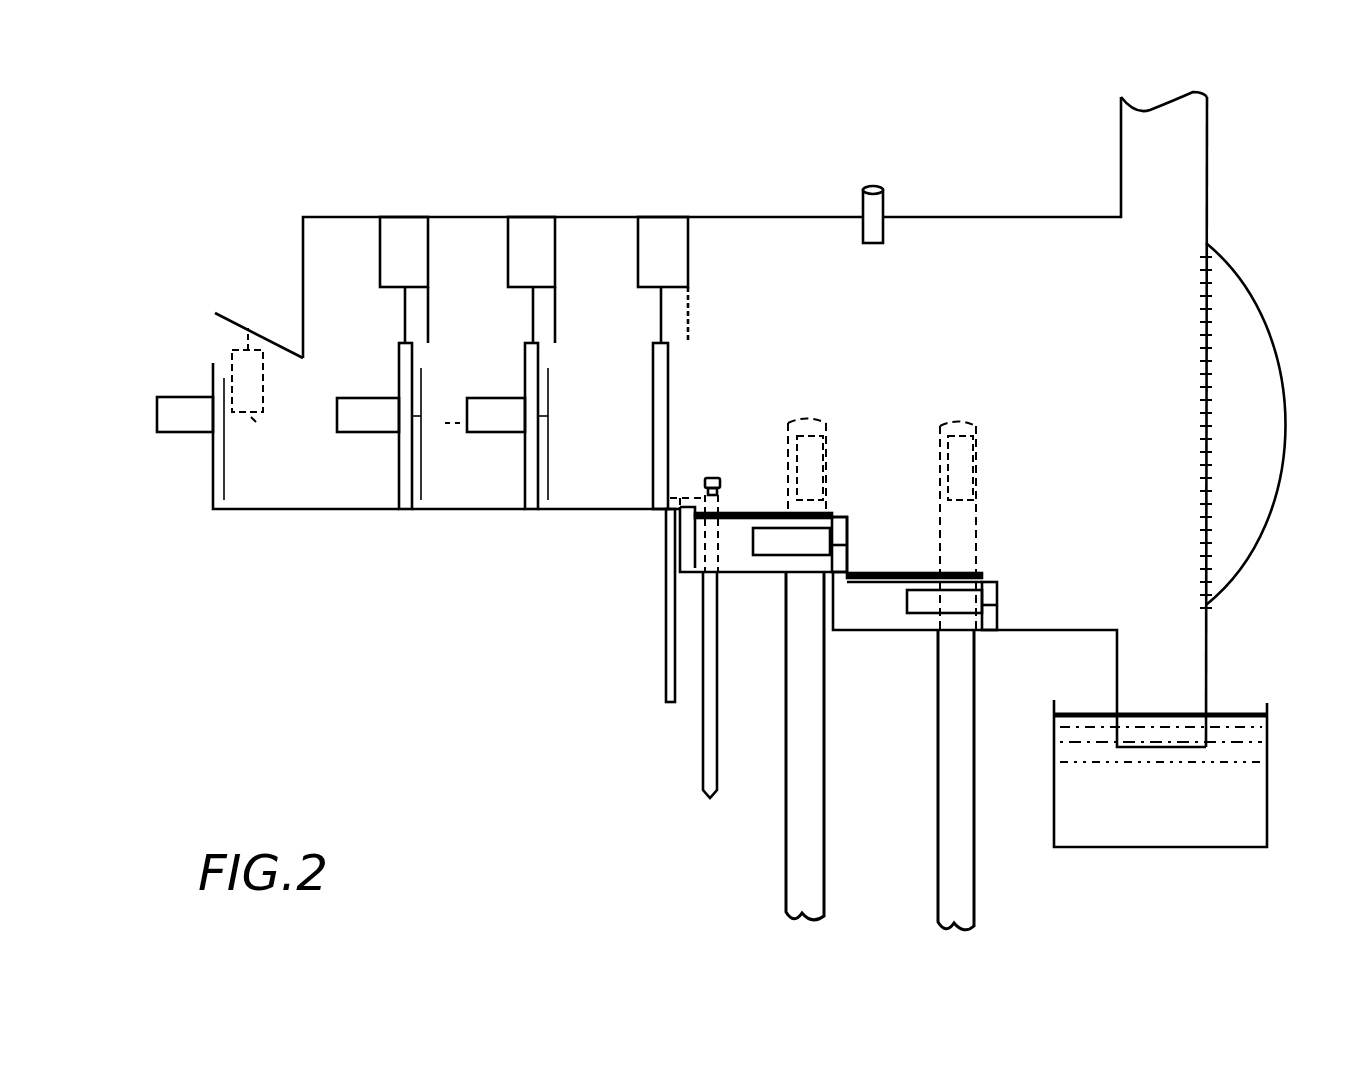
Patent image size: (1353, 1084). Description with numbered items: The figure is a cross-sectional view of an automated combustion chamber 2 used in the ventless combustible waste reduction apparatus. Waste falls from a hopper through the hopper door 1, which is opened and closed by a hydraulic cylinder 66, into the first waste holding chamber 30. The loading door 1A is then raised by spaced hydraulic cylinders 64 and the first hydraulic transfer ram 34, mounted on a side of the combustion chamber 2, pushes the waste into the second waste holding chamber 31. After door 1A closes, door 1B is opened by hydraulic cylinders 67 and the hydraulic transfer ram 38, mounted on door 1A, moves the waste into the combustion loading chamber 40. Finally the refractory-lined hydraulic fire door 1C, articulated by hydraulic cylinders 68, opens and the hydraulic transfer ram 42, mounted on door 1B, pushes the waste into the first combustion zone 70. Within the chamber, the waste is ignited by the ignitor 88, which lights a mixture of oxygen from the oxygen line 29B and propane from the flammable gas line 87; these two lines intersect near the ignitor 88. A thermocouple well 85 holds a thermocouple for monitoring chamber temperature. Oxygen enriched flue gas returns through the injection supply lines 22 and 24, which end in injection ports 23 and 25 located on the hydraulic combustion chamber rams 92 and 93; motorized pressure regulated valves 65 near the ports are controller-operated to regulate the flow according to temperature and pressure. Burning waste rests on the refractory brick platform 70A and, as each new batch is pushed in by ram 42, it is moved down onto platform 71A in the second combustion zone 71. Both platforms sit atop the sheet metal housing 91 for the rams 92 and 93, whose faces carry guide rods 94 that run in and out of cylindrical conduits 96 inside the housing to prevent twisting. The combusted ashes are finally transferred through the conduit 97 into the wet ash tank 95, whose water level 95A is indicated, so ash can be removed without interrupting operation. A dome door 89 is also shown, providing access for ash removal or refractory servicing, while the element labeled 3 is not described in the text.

The hopper door 1 is at (238, 327).
The loading door 1A is at (398, 478).
The door 1B is at (525, 478).
The hydraulic fire door 1C is at (653, 478).
The combustion chamber 2 is at (1015, 240).
The measuring tube 3 is at (1195, 147).
The injection supply line 22 is at (812, 900).
The injection port 23 is at (805, 422).
The injection supply line 24 is at (972, 900).
The injection port 25 is at (967, 425).
The oxygen line 29B is at (703, 755).
The first waste holding chamber 30 is at (296, 478).
The second waste holding chamber 31 is at (452, 478).
The first hydraulic transfer ram 34 is at (222, 467).
The hydraulic transfer ram 38 is at (421, 382).
The combustion loading chamber 40 is at (583, 478).
The hydraulic transfer ram 42 is at (548, 382).
The hydraulic cylinders 64 is at (406, 222).
The pressure regulated valve 65 is at (826, 455).
The hydraulic cylinder 66 is at (263, 390).
The hydraulic cylinders 67 is at (533, 222).
The hydraulic cylinders 68 is at (663, 222).
The first combustion zone 70 is at (738, 410).
The platform 70A is at (757, 515).
The second combustion zone 71 is at (905, 440).
The platform 71A is at (918, 575).
The thermocouple well 85 is at (874, 183).
The flammable gas line 87 is at (666, 665).
The ignitor 88 is at (712, 475).
The dome door 89 is at (1283, 375).
The sheet metal housing 91 is at (772, 572).
The hydraulic combustion chamber ram 92 is at (850, 552).
The hydraulic combustion chamber ram 93 is at (997, 608).
The guide rod 94 is at (840, 515).
The wet ash tank 95 is at (1268, 795).
The water level 95A is at (1237, 712).
The cylindrical conduit 96 is at (742, 518).
The conduit 97 is at (1137, 668).